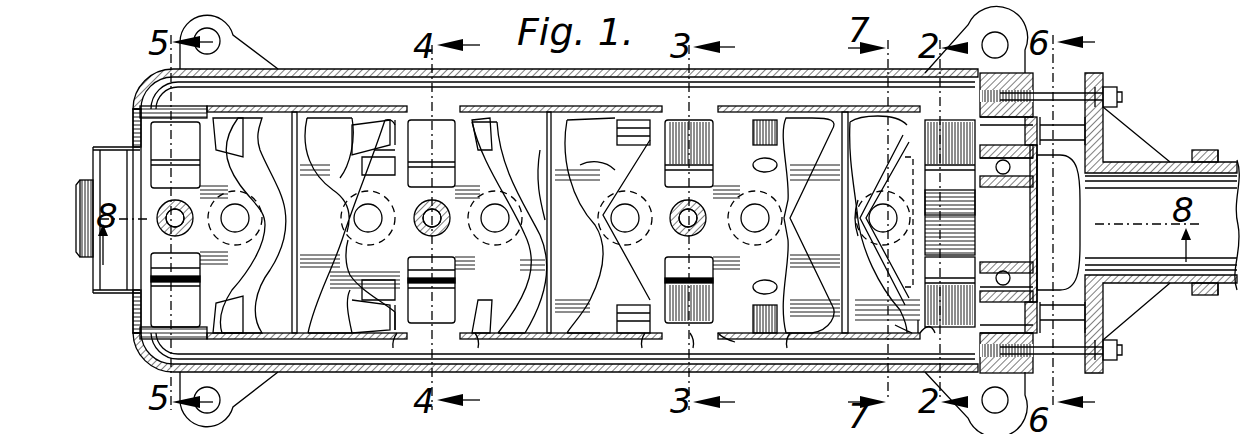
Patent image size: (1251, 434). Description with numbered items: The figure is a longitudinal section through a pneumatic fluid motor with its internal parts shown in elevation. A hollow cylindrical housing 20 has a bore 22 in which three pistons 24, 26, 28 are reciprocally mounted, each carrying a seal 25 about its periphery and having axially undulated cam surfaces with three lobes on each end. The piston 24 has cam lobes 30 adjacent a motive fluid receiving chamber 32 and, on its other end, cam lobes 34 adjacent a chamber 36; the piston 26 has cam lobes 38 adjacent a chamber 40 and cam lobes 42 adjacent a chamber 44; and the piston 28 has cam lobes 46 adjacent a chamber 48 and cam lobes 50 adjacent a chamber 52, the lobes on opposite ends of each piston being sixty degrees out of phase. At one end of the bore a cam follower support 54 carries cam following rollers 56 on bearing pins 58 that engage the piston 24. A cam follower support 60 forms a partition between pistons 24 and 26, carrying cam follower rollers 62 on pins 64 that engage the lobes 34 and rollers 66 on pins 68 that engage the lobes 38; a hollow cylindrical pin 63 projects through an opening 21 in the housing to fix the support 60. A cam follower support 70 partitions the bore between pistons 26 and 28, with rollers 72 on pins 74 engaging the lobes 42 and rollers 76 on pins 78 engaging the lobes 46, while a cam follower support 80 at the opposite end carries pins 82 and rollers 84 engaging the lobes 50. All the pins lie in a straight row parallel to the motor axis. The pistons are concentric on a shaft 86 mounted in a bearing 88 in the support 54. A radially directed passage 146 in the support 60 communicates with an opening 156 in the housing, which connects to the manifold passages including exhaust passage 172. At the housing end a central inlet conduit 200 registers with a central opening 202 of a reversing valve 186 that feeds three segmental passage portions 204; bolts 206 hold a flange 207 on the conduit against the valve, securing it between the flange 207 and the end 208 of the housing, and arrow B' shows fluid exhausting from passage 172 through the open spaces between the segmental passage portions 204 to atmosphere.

The housing 20 is at (630, 72).
The opening 21 is at (683, 210).
The bore 22 is at (583, 104).
The piston 24 is at (833, 205).
The seal 25 is at (845, 113).
The piston 26 is at (538, 180).
The piston 28 is at (326, 190).
The cam lobes 30 is at (918, 315).
The motive fluid receiving chamber 32 is at (900, 335).
The cam lobes 34 is at (770, 172).
The motive fluid receiving chamber 36 is at (794, 345).
The cam lobes 38 is at (612, 288).
The motive fluid receiving chamber 40 is at (650, 345).
The cam lobes 42 is at (492, 294).
The motive fluid receiving chamber 44 is at (494, 344).
The cam lobes 46 is at (355, 295).
The motive fluid receiving chamber 48 is at (395, 344).
The cam lobes 50 is at (240, 297).
The motive fluid receiving chamber 52 is at (215, 303).
The cam follower support 54 is at (910, 272).
The cam following rollers 56 is at (858, 218).
The bearing pins 58 is at (895, 208).
The cam follower support 60 is at (726, 257).
The cam follower rollers 62 is at (785, 305).
The hollow cylindrical pin 63 is at (696, 212).
The pins 64 is at (775, 275).
The cam follower rollers 66 is at (612, 188).
The pins 68 is at (636, 208).
The cam follower support 70 is at (476, 260).
The cam follower rollers 72 is at (517, 210).
The pins 74 is at (488, 216).
The cam follower rollers 76 is at (345, 208).
The pins 78 is at (368, 280).
The cam follower support 80 is at (143, 318).
The pins 82 is at (243, 204).
The cam follower rollers 84 is at (263, 205).
The shaft 86 is at (925, 240).
The bearing 88 is at (997, 172).
The radially directed passage 146 is at (709, 347).
The opening 156 is at (747, 345).
The manifold exhaust passage 172 is at (1022, 120).
The reversing valve 186 is at (1096, 300).
The central inlet conduit 200 is at (1177, 186).
The central opening 202 is at (1085, 208).
The segmental passage portions 204 is at (1015, 316).
The bolts 206 is at (1124, 350).
The flange 207 is at (1100, 325).
The end of housing 208 is at (1045, 373).
The arrow B B' is at (1042, 128).